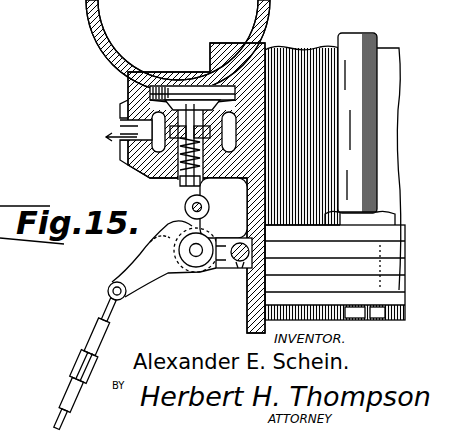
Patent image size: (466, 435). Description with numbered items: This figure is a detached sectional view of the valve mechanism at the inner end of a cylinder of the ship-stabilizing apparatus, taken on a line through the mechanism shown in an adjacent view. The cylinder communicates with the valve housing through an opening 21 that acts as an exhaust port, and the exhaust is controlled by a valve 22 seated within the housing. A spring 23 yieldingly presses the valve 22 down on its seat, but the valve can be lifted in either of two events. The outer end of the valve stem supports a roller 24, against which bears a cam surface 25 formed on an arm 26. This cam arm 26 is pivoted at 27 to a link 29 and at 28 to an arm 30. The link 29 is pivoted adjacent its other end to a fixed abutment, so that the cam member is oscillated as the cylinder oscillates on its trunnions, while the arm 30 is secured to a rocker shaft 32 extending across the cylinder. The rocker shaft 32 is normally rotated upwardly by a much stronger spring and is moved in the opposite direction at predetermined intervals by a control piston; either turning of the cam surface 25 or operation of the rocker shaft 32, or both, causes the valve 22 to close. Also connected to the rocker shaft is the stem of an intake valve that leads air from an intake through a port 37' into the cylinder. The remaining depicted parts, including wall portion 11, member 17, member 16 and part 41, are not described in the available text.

The flywheel rim 41 is at (3, 12).
The valve 22 is at (172, 100).
The opening 21 is at (216, 92).
The port 37' is at (126, 120).
The spring 23 is at (183, 185).
The roller 24 is at (204, 208).
The cam surface 25 is at (178, 232).
The arm 26 is at (177, 274).
The pivot 28 is at (200, 250).
The pivot 27 is at (112, 287).
The arm 30 is at (238, 268).
The rocker shaft 32 is at (240, 270).
The link 29 is at (59, 418).
The cylinder wall 11 is at (255, 52).
The piston 17 is at (352, 33).
The cylinder head block 16 is at (335, 272).